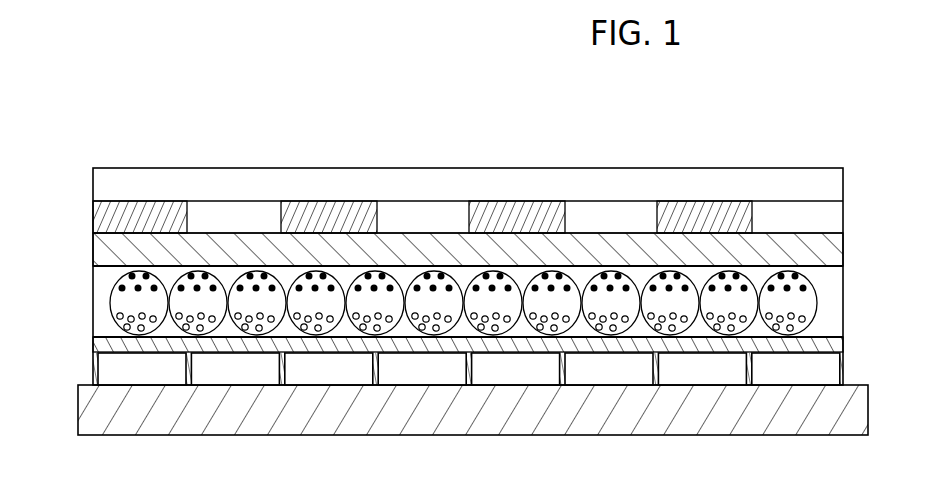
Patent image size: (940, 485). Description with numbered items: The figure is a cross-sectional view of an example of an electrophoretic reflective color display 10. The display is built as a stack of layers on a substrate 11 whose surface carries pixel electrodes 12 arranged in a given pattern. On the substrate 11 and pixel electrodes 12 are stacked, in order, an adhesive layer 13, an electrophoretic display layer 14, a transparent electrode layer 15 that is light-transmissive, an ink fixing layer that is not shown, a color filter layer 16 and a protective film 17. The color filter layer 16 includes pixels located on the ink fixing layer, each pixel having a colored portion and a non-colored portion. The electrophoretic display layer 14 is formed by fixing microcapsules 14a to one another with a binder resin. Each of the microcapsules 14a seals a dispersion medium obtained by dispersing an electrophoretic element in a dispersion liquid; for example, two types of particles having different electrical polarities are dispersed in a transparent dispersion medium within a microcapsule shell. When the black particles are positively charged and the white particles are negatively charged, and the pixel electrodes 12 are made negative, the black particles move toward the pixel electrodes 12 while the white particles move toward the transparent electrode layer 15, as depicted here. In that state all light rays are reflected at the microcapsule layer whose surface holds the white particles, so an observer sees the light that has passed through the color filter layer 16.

The electrophoretic reflective color display 10 is at (240, 167).
The substrate 11 is at (438, 435).
The pixel electrodes 12 is at (828, 371).
The adhesive layer 13 is at (843, 340).
The electrophoretic display layer 14 is at (467, 304).
The microcapsules 14a is at (110, 302).
The transparent electrode layer 15 is at (843, 251).
The color filter layer 16 is at (843, 217).
The protective film 17 is at (539, 167).